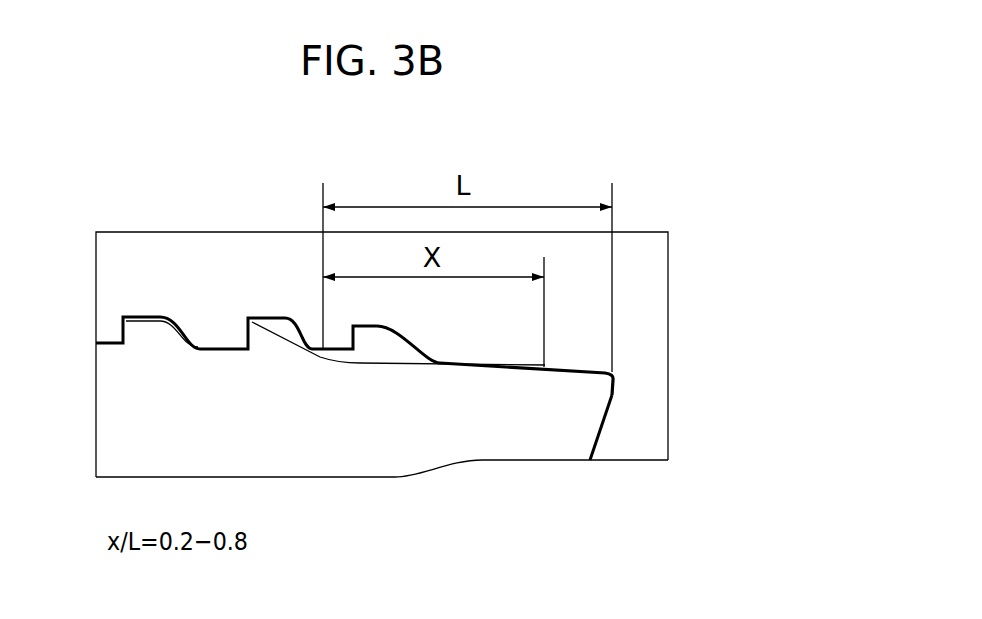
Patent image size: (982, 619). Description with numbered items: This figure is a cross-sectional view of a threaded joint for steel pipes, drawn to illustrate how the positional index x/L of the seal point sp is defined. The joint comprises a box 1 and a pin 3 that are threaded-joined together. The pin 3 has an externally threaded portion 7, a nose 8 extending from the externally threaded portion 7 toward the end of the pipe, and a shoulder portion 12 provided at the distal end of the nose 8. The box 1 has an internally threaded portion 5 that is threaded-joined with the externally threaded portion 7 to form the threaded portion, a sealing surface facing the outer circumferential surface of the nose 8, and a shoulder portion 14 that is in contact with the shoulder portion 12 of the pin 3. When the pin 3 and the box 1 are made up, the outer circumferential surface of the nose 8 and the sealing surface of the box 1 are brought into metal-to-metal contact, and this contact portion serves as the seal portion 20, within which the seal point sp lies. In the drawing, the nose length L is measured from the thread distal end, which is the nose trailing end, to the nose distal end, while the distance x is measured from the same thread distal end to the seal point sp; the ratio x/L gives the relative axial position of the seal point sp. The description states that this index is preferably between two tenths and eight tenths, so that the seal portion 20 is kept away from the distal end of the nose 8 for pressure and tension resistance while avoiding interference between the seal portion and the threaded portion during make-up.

The box 1 is at (128, 284).
The pin 3 is at (128, 428).
The internally threaded portion 5 is at (222, 330).
The externally threaded portion 7 is at (150, 338).
The nose 8 is at (510, 427).
The shoulder portion 12 is at (600, 430).
The shoulder portion 14 is at (610, 410).
The seal portion 20 is at (533, 360).
The seal point sp is at (545, 365).